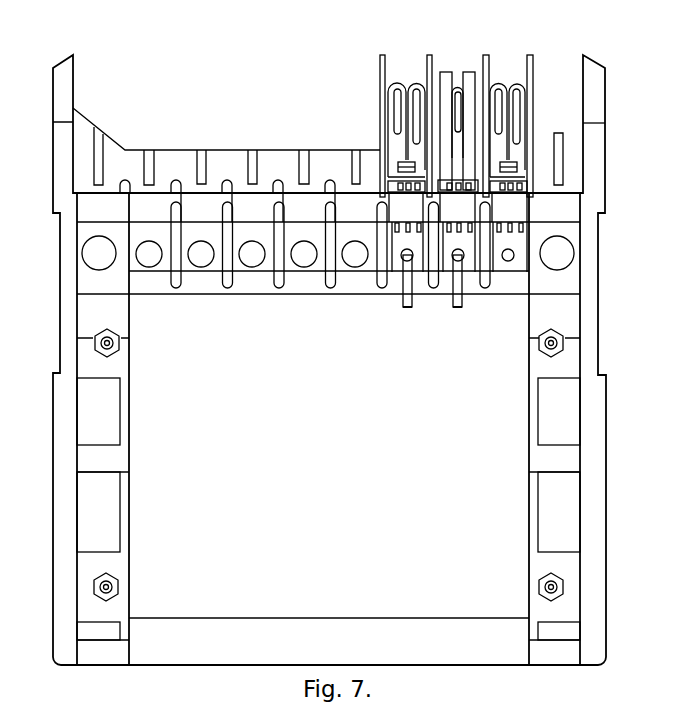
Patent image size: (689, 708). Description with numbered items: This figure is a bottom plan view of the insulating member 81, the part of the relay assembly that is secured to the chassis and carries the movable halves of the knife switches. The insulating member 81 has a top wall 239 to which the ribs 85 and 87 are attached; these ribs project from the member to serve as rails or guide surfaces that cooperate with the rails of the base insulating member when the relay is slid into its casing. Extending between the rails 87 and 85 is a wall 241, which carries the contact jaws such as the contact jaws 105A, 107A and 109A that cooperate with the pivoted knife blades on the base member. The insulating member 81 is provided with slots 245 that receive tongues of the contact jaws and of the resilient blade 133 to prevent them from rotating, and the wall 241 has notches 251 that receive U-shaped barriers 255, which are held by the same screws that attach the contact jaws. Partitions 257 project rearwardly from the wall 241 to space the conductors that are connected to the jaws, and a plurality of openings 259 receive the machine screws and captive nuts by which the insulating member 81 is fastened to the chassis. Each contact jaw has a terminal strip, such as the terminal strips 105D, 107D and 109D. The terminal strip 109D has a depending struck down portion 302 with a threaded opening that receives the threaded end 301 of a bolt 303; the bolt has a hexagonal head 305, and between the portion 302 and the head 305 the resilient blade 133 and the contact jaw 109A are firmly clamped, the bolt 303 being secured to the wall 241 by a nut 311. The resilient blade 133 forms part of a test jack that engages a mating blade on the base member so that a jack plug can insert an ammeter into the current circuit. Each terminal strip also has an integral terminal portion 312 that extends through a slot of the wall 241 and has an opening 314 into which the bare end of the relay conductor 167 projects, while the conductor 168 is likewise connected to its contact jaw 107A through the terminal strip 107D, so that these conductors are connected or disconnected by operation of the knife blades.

The insulating member 81 is at (606, 398).
The rib 85 is at (606, 549).
The rib 87 is at (57, 552).
The top wall 239 is at (350, 619).
The wall 241 is at (239, 217).
The slots 245 is at (253, 152).
The notches 251 is at (307, 193).
The U-shaped barriers 255 is at (458, 207).
The partitions 257 is at (230, 286).
The openings 259 is at (125, 343).
The threaded end 301 is at (396, 157).
The struck down portion 302 is at (414, 177).
The bolt 303 is at (512, 166).
The hexagonal head 305 is at (380, 196).
The nut 311 is at (459, 247).
The terminal portion 312 is at (432, 295).
The opening 314 is at (400, 258).
The contact jaw 105A is at (498, 82).
The contact jaw 107A is at (460, 80).
The contact jaw 109A is at (398, 80).
The terminal strip 105D is at (512, 148).
The terminal strip 107D is at (466, 164).
The terminal strip 109D is at (408, 137).
The resilient blade 133 is at (470, 88).
The conductor 167 is at (406, 309).
The conductor 168 is at (457, 309).